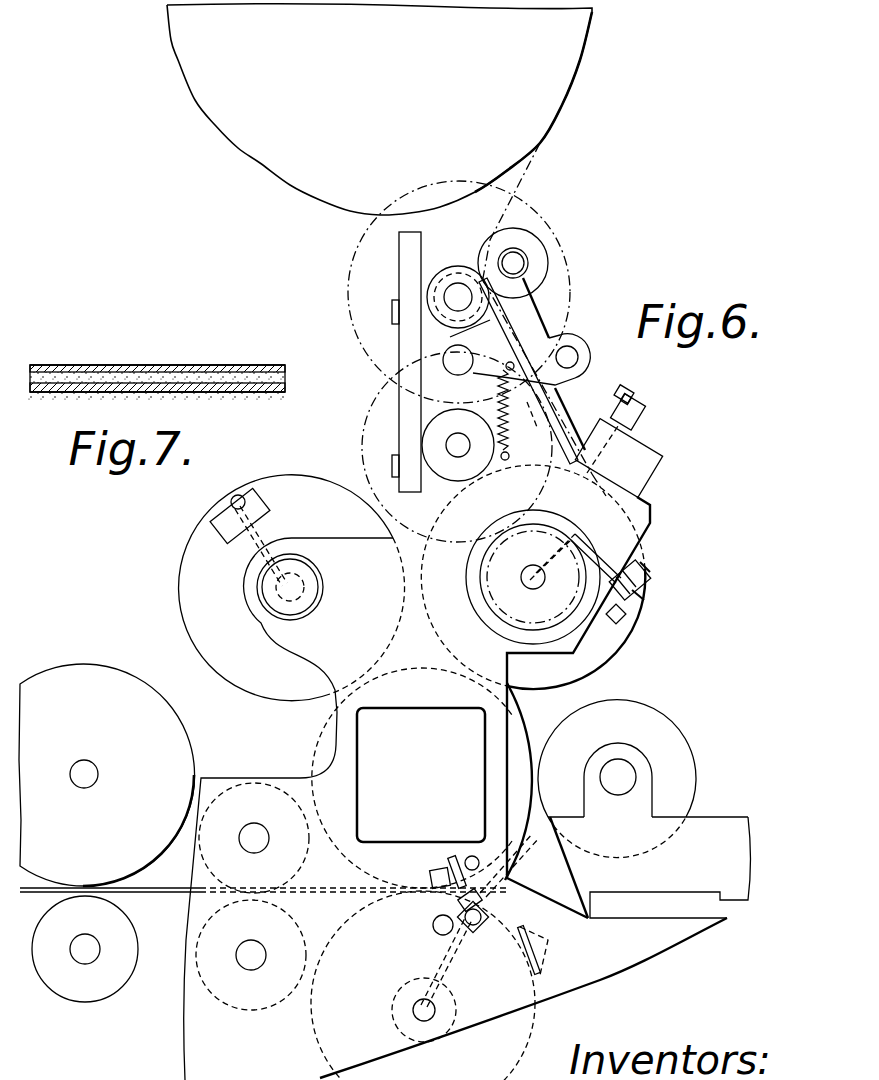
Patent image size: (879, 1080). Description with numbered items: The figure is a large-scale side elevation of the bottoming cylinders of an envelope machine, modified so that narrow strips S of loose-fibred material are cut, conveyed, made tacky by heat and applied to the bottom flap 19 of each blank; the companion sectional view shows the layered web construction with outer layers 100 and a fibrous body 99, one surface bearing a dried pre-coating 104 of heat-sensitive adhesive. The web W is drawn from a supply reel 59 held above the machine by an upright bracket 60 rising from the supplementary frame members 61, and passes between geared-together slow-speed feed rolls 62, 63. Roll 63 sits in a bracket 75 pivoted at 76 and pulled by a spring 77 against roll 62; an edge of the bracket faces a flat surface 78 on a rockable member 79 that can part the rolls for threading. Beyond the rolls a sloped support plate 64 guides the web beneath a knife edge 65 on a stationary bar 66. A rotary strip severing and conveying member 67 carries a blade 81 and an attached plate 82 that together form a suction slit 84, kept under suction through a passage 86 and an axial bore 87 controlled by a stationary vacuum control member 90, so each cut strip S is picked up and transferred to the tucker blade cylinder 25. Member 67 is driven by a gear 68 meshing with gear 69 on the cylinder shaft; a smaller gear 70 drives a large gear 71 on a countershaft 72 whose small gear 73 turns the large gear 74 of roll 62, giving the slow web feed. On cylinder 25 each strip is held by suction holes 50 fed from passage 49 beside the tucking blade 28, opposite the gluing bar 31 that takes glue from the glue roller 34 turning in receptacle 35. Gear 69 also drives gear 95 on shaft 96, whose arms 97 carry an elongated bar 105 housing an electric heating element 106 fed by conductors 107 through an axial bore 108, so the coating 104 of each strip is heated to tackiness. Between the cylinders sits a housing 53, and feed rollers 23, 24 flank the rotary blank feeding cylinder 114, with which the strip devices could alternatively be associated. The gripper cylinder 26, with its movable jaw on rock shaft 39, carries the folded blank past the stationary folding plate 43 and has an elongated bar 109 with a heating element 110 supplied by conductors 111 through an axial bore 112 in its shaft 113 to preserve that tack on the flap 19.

In FIG. 6, the supply reel 59 is at (580, 76).
In FIG. 6, the web W is at (525, 198).
In FIG. 6, the upright bracket 60 is at (402, 264).
In FIG. 6, the feed roll 62 is at (455, 276).
In FIG. 6, the feed roll 63 is at (540, 251).
In FIG. 6, the large gear 74 is at (353, 320).
In FIG. 6, the bracket 75 is at (545, 322).
In FIG. 6, the pivot 76 is at (580, 356).
In FIG. 6, the rockable member 79 is at (450, 350).
In FIG. 6, the flat surface 78 is at (478, 374).
In FIG. 6, the large gear 71 is at (430, 543).
In FIG. 6, the small gear 73 is at (420, 432).
In FIG. 6, the countershaft 72 is at (448, 455).
In FIG. 6, the support plate 64 is at (507, 421).
In FIG. 6, the spring 77 is at (507, 447).
In FIG. 6, the stationary bar 66 is at (650, 474).
In FIG. 6, the knife edge 65 is at (620, 428).
In FIG. 6, the supplementary frame member 61 is at (652, 508).
In FIG. 6, the rotary strip severing and conveying member 67 is at (565, 497).
In FIG. 6, the gear 68 is at (432, 620).
In FIG. 6, the smaller gear 70 is at (490, 608).
In FIG. 6, the axial bore 87 is at (535, 586).
In FIG. 6, the passage 86 is at (590, 560).
In FIG. 6, the vacuum control member 90 is at (577, 540).
In FIG. 6, the strip S is at (650, 580).
In FIG. 6, the blade 81 is at (642, 565).
In FIG. 6, the plate 82 is at (641, 597).
In FIG. 6, the suction slit 84 is at (627, 603).
In FIG. 6, the gear 69 is at (522, 736).
In FIG. 6, the housing 53 is at (403, 711).
In FIG. 6, the gear 95 is at (282, 588).
In FIG. 6, the transverse shaft 96 is at (316, 590).
In FIG. 6, the radial arm 97 is at (280, 521).
In FIG. 6, the electric heating element 106 is at (226, 500).
In FIG. 6, the elongated bar 105 is at (250, 484).
In FIG. 6, the insulated conductors 107 is at (253, 538).
In FIG. 6, the axial bore 108 is at (302, 570).
In FIG. 6, the tucker blade cylinder 25 is at (323, 744).
In FIG. 6, the rotary blank feeding cylinder 114 is at (78, 665).
In FIG. 6, the roller 23 is at (78, 990).
In FIG. 6, the roller 24 is at (238, 783).
In FIG. 6, the bottom flap 19 is at (512, 881).
In FIG. 6, the cylinder passage 49 is at (472, 855).
In FIG. 6, the tucking blade 28 is at (452, 862).
In FIG. 6, the gluing bar 31 is at (432, 878).
In FIG. 6, the suction holes 50 is at (515, 853).
In FIG. 6, the electric heating element 110 is at (483, 909).
In FIG. 6, the rock shaft 39 is at (437, 929).
In FIG. 6, the gripper cylinder 26 is at (423, 985).
In FIG. 6, the insulated conductors 111 is at (452, 968).
In FIG. 6, the shaft 113 is at (392, 1009).
In FIG. 6, the axial bore 112 is at (436, 1010).
In FIG. 6, the elongated bar 109 is at (490, 916).
In FIG. 6, the folding plate 43 is at (545, 957).
In FIG. 6, the glue roller 34 is at (662, 723).
In FIG. 6, the glue receptacle 35 is at (705, 824).
In FIG. 7, the laminate 99 is at (48, 375).
In FIG. 7, the cover layer 100 is at (97, 368).
In FIG. 7, the pre-coating 104 is at (38, 399).